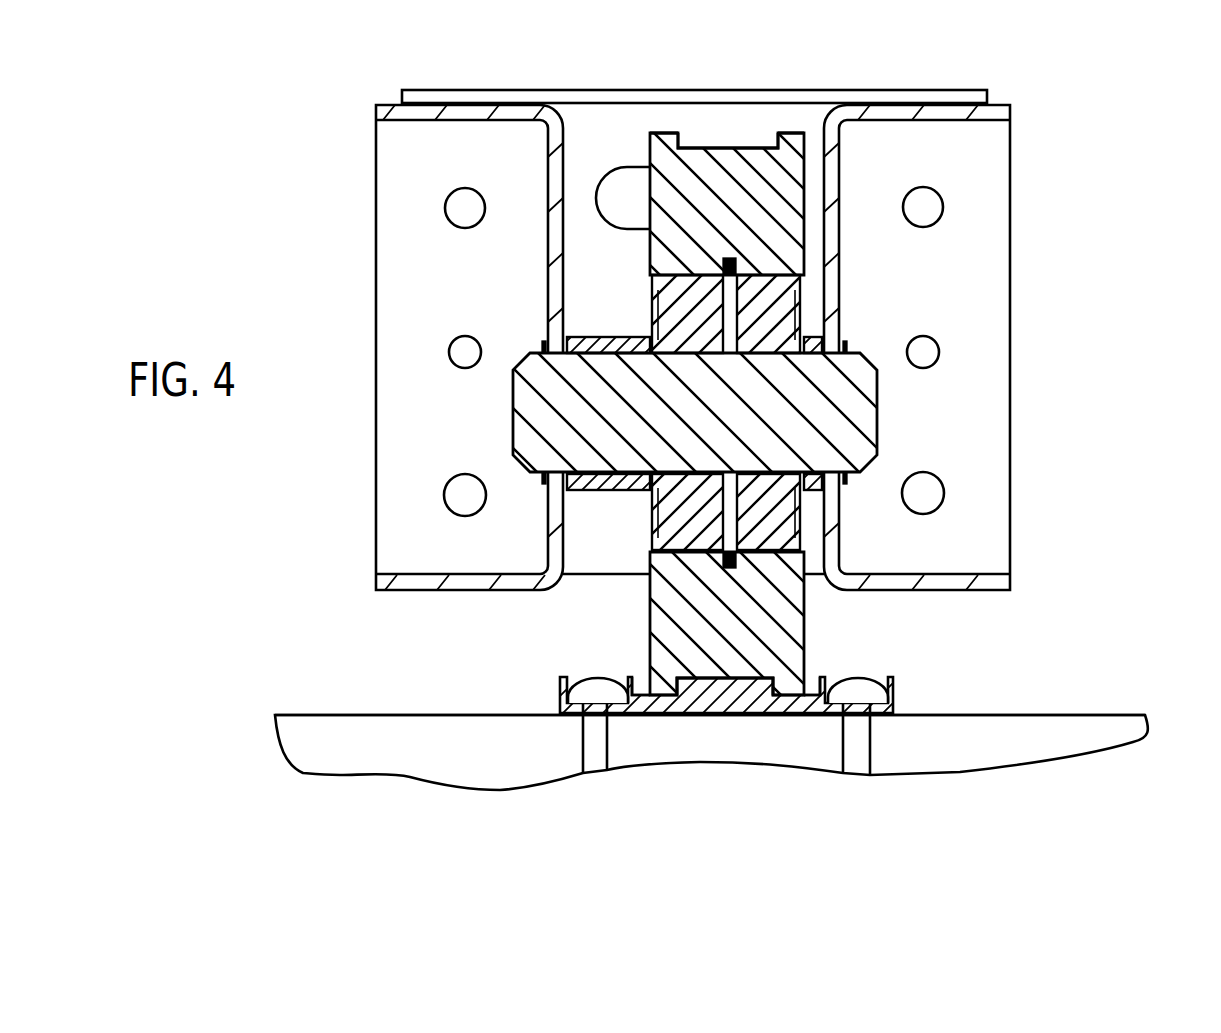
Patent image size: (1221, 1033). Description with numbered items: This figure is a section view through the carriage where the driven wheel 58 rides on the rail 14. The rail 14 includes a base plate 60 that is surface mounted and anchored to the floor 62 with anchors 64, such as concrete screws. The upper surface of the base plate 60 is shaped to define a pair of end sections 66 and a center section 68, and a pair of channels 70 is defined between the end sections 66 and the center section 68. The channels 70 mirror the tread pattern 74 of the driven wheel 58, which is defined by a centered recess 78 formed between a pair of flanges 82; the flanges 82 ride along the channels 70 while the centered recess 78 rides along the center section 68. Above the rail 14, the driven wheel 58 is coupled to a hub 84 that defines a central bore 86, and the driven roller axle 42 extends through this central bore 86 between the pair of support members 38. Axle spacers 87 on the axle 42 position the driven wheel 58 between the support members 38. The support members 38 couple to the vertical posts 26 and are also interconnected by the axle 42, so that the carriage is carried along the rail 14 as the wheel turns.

The rail 14 is at (1145, 667).
The vertical posts 26 is at (970, 88).
The support members 38 is at (1010, 318).
The driven roller axle 42 is at (878, 413).
The driven wheel 58 is at (814, 200).
The base plate 60 is at (895, 707).
The floor 62 is at (1022, 763).
The anchors 64 is at (593, 770).
The end sections 66 is at (627, 682).
The center section 68 is at (734, 680).
The channels 70 is at (640, 684).
The tread pattern 74 is at (650, 143).
The centered recess 78 is at (717, 147).
The flanges 82 is at (662, 132).
The hub 84 is at (657, 290).
The central bore 86 is at (596, 475).
The axle spacers 87 is at (598, 326).